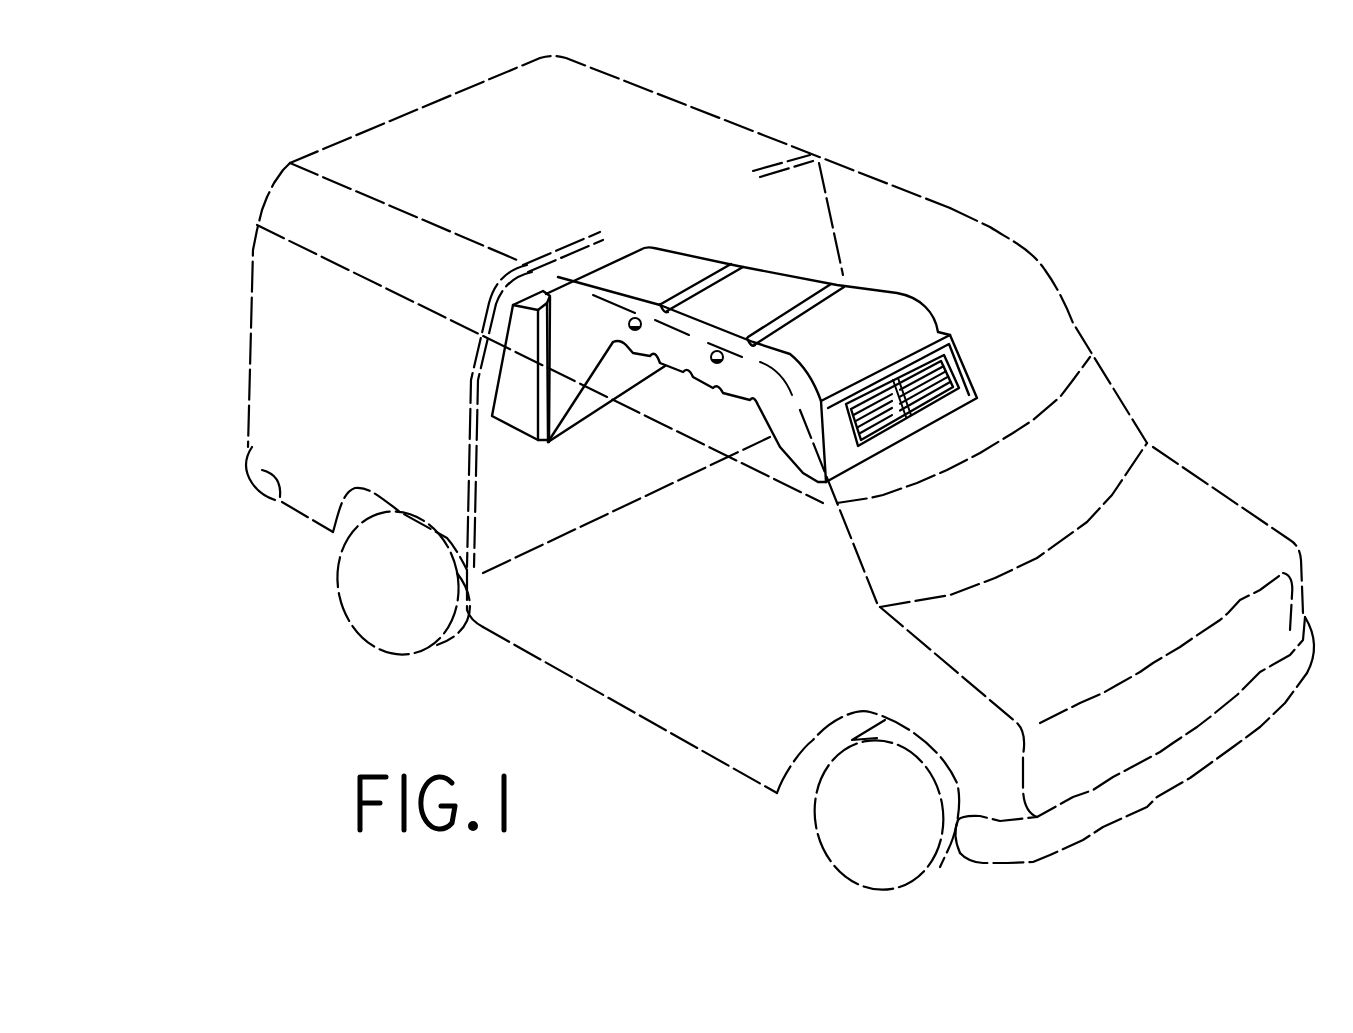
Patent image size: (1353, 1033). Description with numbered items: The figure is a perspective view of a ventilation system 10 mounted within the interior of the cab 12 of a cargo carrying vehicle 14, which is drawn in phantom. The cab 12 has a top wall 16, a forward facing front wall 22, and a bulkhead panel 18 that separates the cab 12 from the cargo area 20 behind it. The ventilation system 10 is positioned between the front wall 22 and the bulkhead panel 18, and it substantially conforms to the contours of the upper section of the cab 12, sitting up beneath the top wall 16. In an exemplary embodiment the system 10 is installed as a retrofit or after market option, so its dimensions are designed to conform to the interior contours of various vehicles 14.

The ventilation system 10 is at (808, 247).
The cab 12 is at (1057, 240).
The cargo carrying vehicle 14 is at (650, 746).
The top wall 16 is at (953, 253).
The bulkhead panel 18 is at (787, 190).
The cargo area 20 is at (647, 110).
The front wall 22 is at (1030, 327).